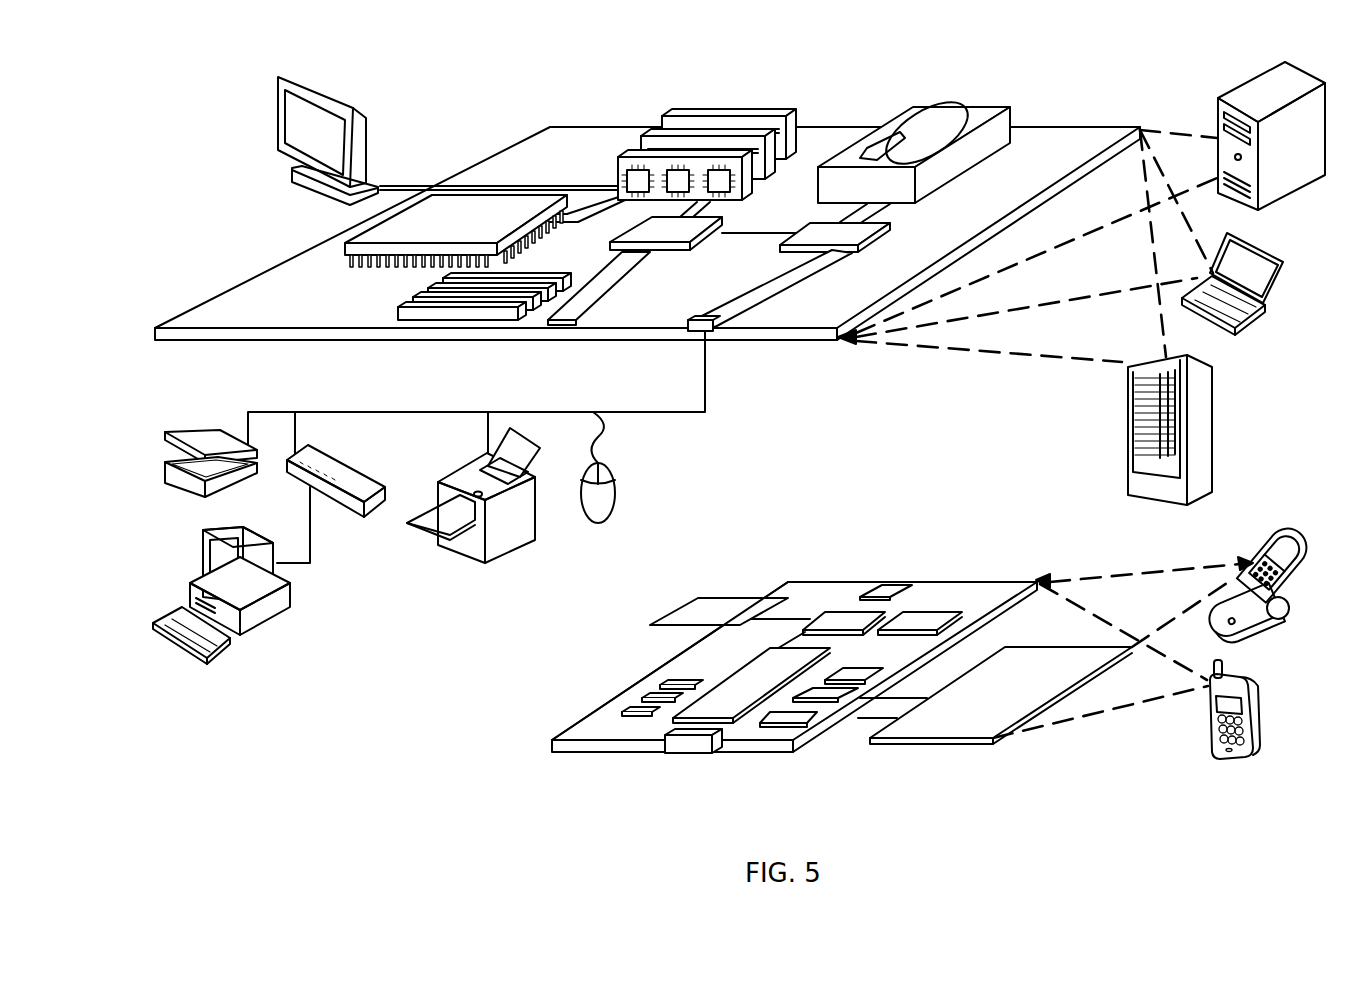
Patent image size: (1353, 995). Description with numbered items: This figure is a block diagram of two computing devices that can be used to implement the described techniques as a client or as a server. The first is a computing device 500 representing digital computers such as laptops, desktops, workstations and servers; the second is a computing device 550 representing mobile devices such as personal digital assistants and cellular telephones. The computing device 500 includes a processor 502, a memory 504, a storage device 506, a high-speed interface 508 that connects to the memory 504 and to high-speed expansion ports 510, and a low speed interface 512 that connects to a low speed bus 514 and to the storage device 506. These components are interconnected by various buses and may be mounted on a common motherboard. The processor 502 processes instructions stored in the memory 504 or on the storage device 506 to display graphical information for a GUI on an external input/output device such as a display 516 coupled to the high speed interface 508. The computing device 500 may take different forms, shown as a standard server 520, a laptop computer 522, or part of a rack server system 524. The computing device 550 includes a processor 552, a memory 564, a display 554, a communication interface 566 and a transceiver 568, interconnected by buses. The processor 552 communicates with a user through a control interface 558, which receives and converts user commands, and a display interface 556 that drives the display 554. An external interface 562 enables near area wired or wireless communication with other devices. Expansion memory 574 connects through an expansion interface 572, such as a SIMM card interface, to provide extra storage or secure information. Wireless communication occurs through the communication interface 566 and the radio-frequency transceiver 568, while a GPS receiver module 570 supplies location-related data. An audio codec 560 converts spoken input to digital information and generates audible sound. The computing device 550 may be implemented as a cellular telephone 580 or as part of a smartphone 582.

The computing device 500 is at (470, 98).
The processor 502 is at (350, 245).
The memory 504 is at (682, 157).
The storage device 506 is at (906, 110).
The high-speed interface 508 is at (637, 225).
The high-speed expansion ports 510 is at (420, 303).
The low speed interface 512 is at (818, 233).
The low speed bus 514 is at (705, 331).
The display 516 is at (285, 75).
The standard server 520 is at (1218, 115).
The laptop computer 522 is at (1283, 262).
The rack server system 524 is at (1124, 455).
The computing device 550 is at (526, 751).
The processor 552 is at (727, 710).
The display 554 is at (960, 730).
The display interface 556 is at (793, 723).
The control interface 558 is at (840, 697).
The audio codec 560 is at (853, 677).
The external interface 562 is at (692, 743).
The memory 564 is at (645, 699).
The communication interface 566 is at (843, 618).
The transceiver 568 is at (923, 615).
The GPS receiver module 570 is at (891, 588).
The expansion interface 572 is at (788, 598).
The expansion memory 574 is at (710, 597).
The cellular telephone 580 is at (1264, 511).
The smartphone 582 is at (1207, 713).